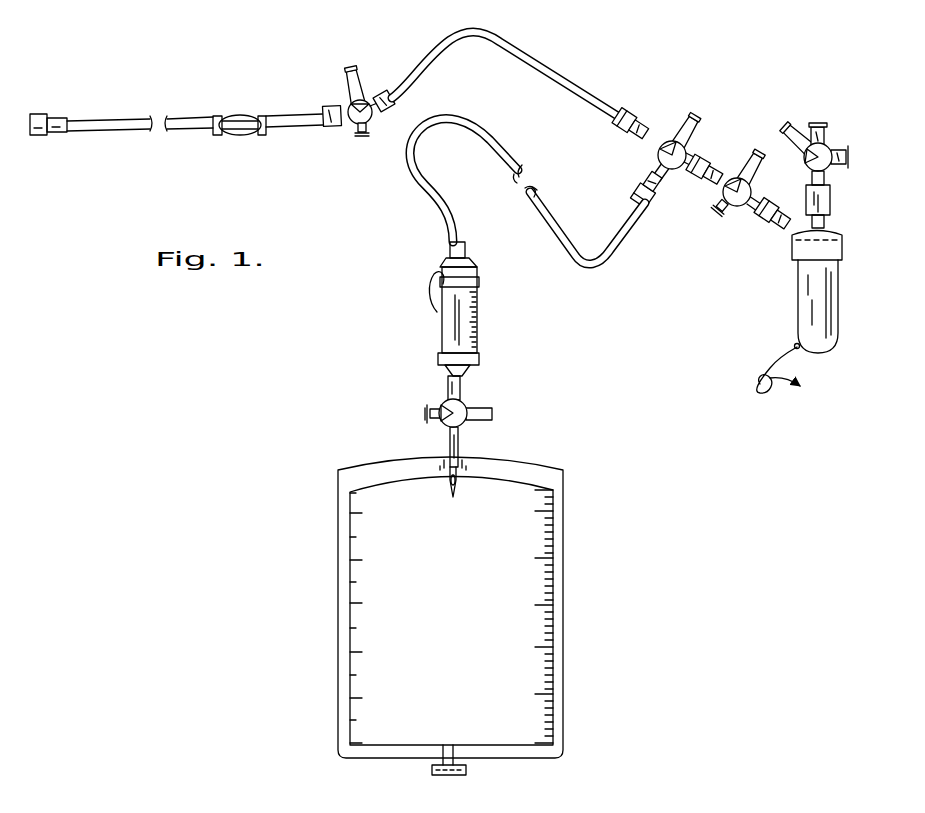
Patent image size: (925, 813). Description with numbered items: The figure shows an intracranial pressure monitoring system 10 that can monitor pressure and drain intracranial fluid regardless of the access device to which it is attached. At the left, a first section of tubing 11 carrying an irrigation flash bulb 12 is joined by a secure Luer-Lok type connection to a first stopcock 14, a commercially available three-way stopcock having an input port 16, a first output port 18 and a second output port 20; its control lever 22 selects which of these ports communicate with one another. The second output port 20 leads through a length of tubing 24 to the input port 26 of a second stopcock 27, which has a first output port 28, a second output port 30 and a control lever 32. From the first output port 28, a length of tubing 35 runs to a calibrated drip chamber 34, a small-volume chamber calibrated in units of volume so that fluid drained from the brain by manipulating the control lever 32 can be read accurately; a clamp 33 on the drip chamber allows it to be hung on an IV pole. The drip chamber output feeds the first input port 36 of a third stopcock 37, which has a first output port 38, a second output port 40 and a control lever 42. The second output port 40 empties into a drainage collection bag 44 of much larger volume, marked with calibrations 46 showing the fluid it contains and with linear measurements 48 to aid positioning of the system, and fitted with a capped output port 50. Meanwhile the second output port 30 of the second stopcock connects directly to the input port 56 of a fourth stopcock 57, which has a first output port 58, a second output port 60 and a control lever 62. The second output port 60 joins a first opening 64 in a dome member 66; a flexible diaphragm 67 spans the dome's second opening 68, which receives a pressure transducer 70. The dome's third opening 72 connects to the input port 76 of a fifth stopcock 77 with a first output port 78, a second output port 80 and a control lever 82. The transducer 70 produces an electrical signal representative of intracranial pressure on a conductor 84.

The intracranial pressure monitoring system 10 is at (665, 117).
The first section of tubing 11 is at (185, 128).
The irrigation flash bulb 12 is at (240, 116).
The first stopcock 14 is at (338, 108).
The input port 16 is at (326, 106).
The first output port 18 is at (376, 148).
The second output port 20 is at (384, 77).
The control lever 22 is at (323, 74).
The length of tubing 24 is at (516, 60).
The input port 26 is at (636, 136).
The second stopcock 27 is at (662, 120).
The first output port 28 is at (631, 185).
The second output port 30 is at (709, 160).
The control lever 32 is at (704, 114).
The clamp 33 is at (433, 300).
The calibrated drip chamber 34 is at (459, 309).
The length of tubing 35 is at (536, 138).
The first input port 36 is at (448, 390).
The third stopcock 37 is at (447, 421).
The first output port 38 is at (428, 414).
The second output port 40 is at (449, 446).
The control lever 42 is at (480, 412).
The drainage collection bag 44 is at (445, 632).
The calibrations 46 is at (553, 613).
The linear measurements 48 is at (350, 601).
The capped output port 50 is at (466, 776).
The input port 56 is at (700, 182).
The fourth stopcock 57 is at (727, 196).
The first output port 58 is at (697, 225).
The second output port 60 is at (773, 199).
The control lever 62 is at (750, 148).
The first opening 64 is at (778, 232).
The dome member 66 is at (835, 232).
The flexible diaphragm 67 is at (812, 241).
The second opening 68 is at (803, 265).
The pressure transducer 70 is at (830, 302).
The third opening 72 is at (826, 201).
The input port 76 is at (826, 178).
The fifth stopcock 77 is at (801, 234).
The first output port 78 is at (868, 155).
The second output port 80 is at (833, 110).
The control lever 82 is at (792, 116).
The conductor 84 is at (768, 374).